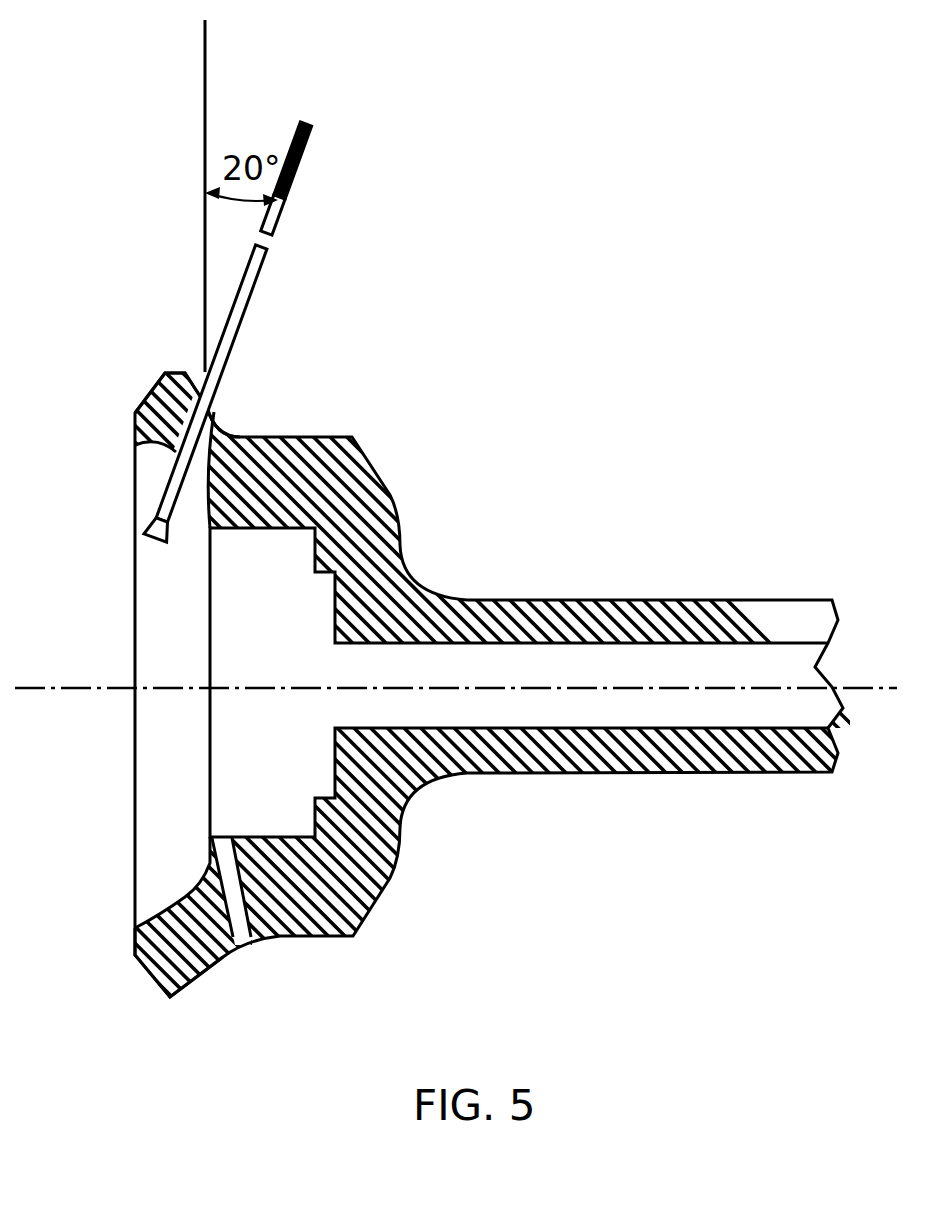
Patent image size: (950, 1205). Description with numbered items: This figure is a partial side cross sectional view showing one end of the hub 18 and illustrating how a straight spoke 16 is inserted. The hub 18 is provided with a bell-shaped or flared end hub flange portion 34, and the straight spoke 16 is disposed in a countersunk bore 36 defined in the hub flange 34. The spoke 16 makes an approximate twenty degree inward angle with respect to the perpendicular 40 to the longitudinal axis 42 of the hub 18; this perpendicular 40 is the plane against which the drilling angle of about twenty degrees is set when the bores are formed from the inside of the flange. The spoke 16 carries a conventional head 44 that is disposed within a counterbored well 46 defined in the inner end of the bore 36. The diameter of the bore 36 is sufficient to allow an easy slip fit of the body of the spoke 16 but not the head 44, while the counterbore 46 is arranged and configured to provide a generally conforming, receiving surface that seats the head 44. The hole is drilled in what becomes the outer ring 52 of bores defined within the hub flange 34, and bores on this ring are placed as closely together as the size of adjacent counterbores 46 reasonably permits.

The straight spoke 16 is at (194, 357).
The hub 18 is at (525, 885).
The hub flange portion 34 is at (122, 855).
The countersunk bore 36 is at (225, 382).
The perpendicular 40 is at (205, 75).
The longitudinal axis 42 is at (91, 688).
The head 44 is at (162, 538).
The counterbored well 46 is at (178, 450).
The outer ring 52 is at (185, 372).